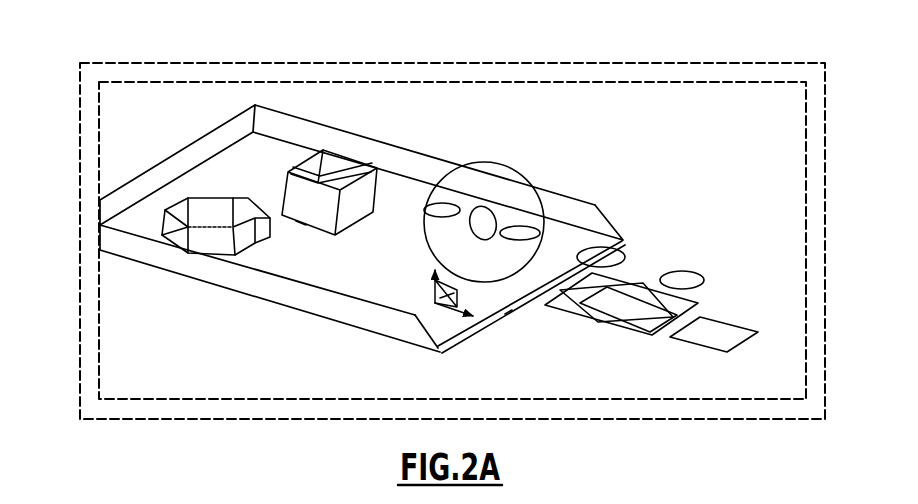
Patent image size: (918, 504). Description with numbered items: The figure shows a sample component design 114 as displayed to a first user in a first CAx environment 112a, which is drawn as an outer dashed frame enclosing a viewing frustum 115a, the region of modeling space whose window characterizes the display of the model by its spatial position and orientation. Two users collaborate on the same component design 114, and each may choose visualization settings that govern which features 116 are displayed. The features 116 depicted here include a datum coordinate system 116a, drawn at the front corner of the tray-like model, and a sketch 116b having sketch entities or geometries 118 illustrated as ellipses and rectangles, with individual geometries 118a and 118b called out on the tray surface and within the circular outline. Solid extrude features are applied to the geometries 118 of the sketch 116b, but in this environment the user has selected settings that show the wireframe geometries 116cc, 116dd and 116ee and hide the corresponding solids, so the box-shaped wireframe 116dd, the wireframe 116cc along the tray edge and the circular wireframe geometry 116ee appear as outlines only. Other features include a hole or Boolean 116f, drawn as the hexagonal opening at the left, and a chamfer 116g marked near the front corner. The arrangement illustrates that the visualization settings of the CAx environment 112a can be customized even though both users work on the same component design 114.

The first CAx environment 112a is at (227, 62).
The viewing frustum 115a is at (123, 80).
The component design 114 is at (197, 142).
The wireframe 116cc is at (418, 148).
The datum coordinate system 116a is at (432, 342).
The hole or Boolean 116f is at (208, 197).
The wireframe 116dd is at (357, 158).
The sketch entity or geometry 118a is at (303, 225).
The wireframe geometry 116ee is at (513, 165).
The sketch entity or geometry 118b is at (543, 230).
The chamfer 116g is at (430, 312).
The features 116 is at (671, 274).
The sketch 116b is at (712, 300).
The sketch entities or geometries 118 is at (508, 316).